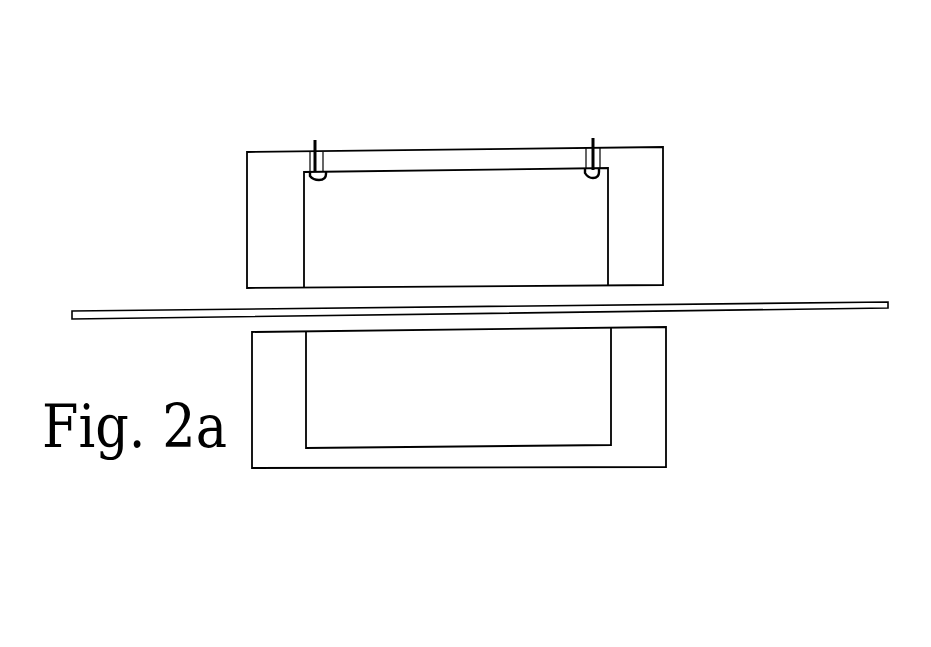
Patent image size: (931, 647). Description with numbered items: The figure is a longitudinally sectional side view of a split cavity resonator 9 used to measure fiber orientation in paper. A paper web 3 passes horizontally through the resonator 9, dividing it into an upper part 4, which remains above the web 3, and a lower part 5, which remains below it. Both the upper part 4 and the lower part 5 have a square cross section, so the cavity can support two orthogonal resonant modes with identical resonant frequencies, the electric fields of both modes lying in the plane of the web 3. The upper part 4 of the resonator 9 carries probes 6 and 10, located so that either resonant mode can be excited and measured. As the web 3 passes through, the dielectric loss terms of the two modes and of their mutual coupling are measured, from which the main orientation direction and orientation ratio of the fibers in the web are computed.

The paper web 3 is at (165, 302).
The upper part 4 is at (609, 257).
The lower part 5 is at (611, 393).
The probe 6 is at (327, 178).
The split cavity resonator 9 is at (355, 105).
The probe 10 is at (576, 174).